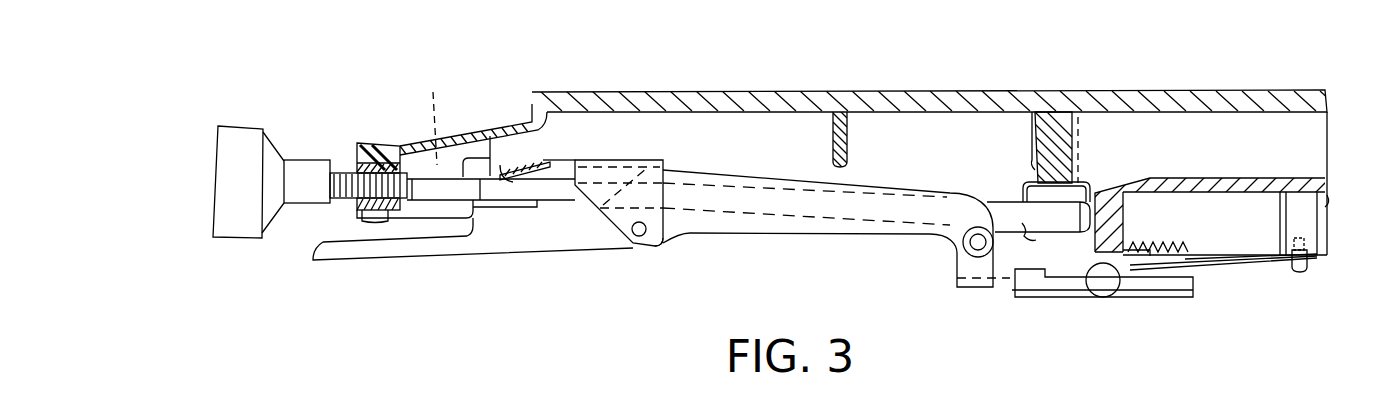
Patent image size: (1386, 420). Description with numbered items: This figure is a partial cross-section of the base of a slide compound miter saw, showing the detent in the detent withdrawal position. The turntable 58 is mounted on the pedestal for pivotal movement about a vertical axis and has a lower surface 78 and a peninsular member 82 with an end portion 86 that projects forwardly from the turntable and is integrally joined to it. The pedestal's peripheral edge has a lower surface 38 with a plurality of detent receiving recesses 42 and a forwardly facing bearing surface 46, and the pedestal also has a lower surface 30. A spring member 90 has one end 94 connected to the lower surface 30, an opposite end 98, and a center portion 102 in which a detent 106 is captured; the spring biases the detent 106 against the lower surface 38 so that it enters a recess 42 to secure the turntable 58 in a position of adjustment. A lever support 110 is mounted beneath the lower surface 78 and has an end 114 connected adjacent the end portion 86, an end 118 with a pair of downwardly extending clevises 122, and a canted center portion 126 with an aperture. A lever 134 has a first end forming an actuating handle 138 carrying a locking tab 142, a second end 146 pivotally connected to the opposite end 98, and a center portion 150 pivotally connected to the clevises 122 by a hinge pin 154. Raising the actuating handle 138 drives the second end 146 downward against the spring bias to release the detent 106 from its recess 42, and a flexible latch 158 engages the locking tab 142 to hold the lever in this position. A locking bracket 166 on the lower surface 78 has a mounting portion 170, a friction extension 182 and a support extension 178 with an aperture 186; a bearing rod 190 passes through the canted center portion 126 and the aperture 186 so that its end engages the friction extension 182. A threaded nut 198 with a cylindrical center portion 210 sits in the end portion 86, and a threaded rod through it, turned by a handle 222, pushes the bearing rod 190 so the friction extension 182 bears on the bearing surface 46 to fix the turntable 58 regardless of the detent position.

The lower surface 30 is at (1324, 205).
The lower surface 38 is at (1190, 258).
The detent receiving recesses 42 is at (1128, 250).
The bearing surface 46 is at (1090, 247).
The turntable 58 is at (1177, 76).
The lower surface 78 is at (1113, 115).
The peninsular member 82 is at (728, 92).
The end portion 86 is at (360, 142).
The spring member 90 is at (1272, 263).
The one end 94 is at (1317, 265).
The opposite end 98 is at (958, 284).
The center portion 102 is at (1140, 297).
The detent 106 is at (1108, 299).
The lever support 110 is at (540, 160).
The end 114 is at (362, 212).
The end 118 is at (663, 161).
The clevises 122 is at (658, 244).
The canted center portion 126 is at (503, 168).
The lever 134 is at (773, 232).
The actuating handle 138 is at (373, 259).
The locking tab 142 is at (488, 150).
The second end 146 is at (981, 203).
The center portion 150 is at (672, 243).
The hinge pin 154 is at (640, 235).
The flexible latch 158 is at (434, 119).
The locking bracket 166 is at (1092, 181).
The mounting portion 170 is at (1038, 170).
The support extension 178 is at (1085, 100).
The friction extension 182 is at (1115, 195).
The aperture 186 is at (1057, 217).
The bearing rod 190 is at (520, 226).
The threaded nut 198 is at (307, 181).
The cylindrical center portion 210 is at (343, 170).
The handle 222 is at (221, 122).